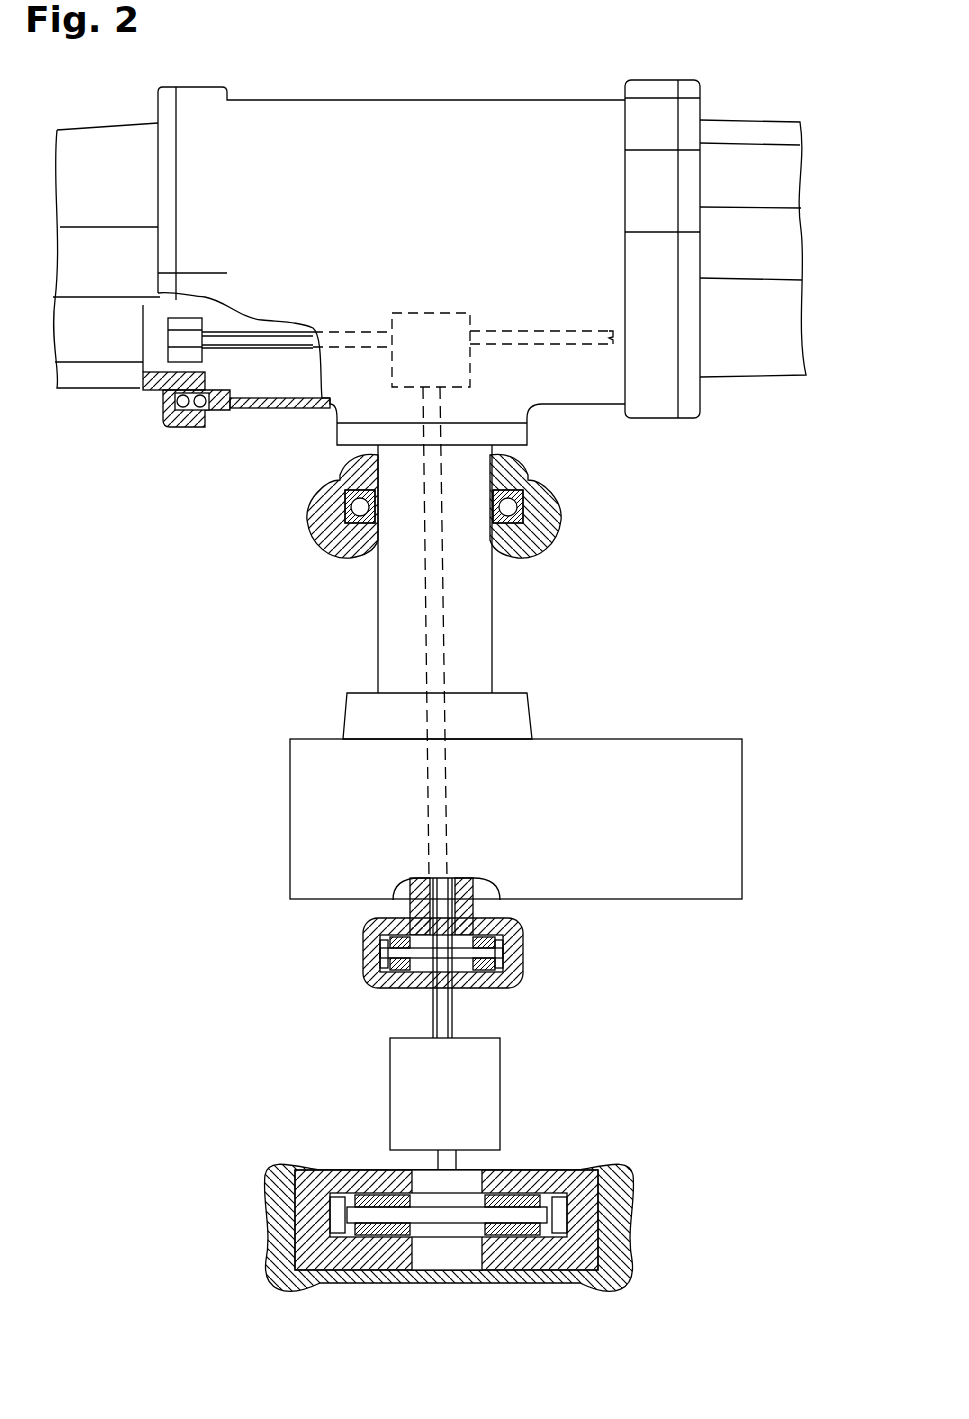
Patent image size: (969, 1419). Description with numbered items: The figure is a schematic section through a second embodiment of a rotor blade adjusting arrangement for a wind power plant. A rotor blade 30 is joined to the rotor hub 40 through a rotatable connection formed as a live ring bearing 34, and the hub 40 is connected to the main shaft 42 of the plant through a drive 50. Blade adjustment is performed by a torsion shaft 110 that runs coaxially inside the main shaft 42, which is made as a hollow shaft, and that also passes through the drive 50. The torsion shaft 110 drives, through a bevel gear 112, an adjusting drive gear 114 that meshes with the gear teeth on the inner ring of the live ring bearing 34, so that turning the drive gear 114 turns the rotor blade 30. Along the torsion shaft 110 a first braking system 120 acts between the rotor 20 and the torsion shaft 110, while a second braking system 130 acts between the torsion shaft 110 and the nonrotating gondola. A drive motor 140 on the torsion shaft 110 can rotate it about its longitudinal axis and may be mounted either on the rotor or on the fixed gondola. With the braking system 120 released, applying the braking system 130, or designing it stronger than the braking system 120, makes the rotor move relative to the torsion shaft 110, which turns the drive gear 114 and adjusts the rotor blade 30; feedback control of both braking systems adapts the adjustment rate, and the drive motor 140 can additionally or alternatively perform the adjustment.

The rotor 20 is at (616, 433).
The rotor blade 30 is at (75, 372).
The live ring bearing 34 is at (190, 420).
The rotor hub 40 is at (563, 120).
The main shaft 42 is at (478, 600).
The drive 50 is at (685, 752).
The torsion shaft 110 is at (445, 1013).
The bevel gear 112 is at (416, 313).
The adjusting drive gear 114 is at (186, 340).
The first braking system 120 is at (543, 958).
The second braking system 130 is at (574, 1130).
The drive motor 140 is at (490, 1067).